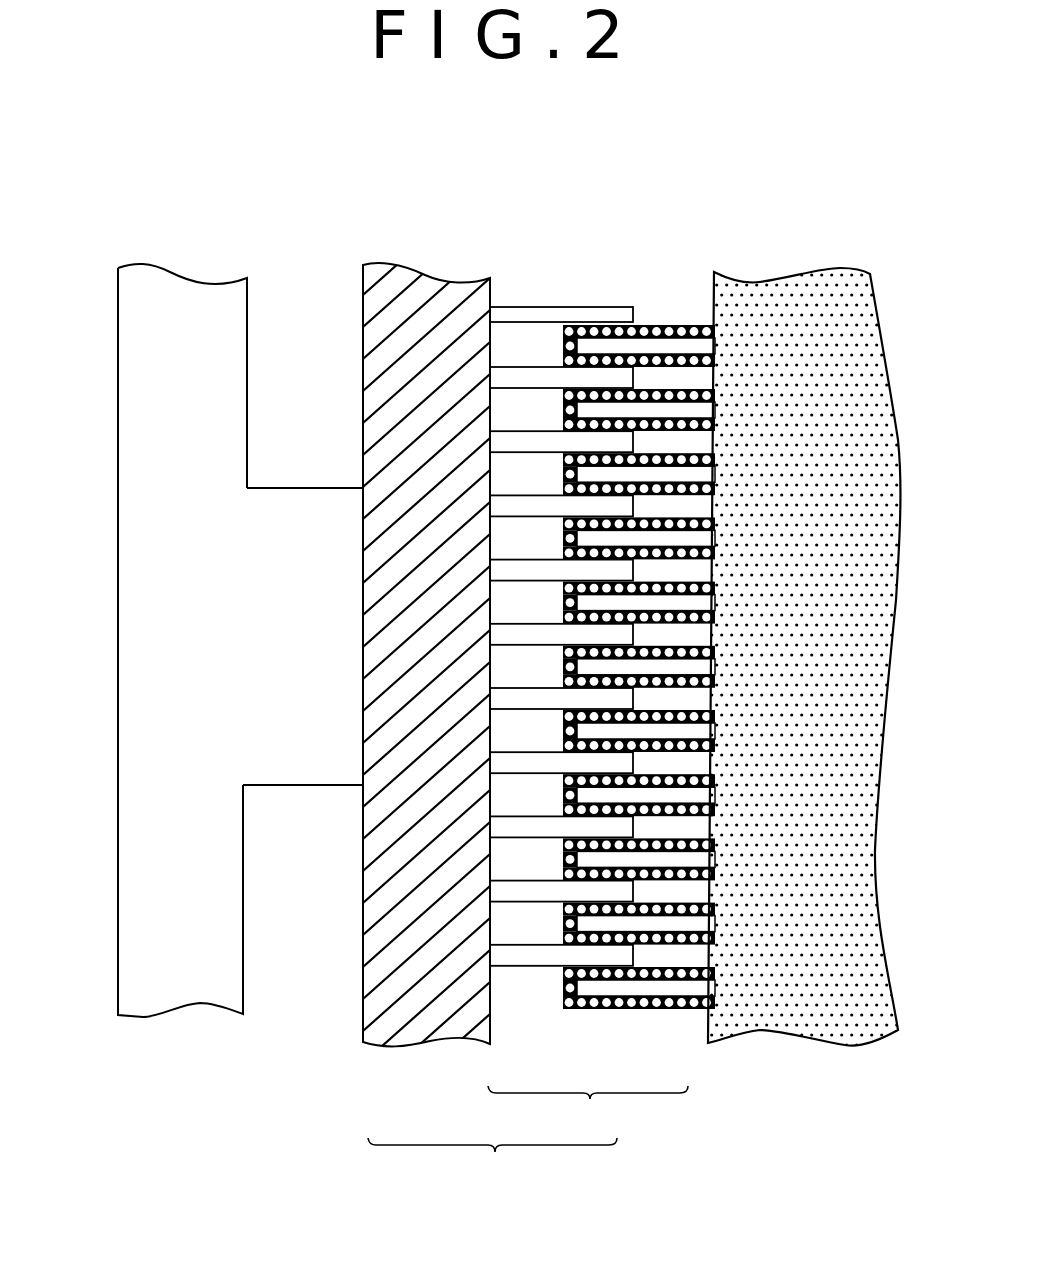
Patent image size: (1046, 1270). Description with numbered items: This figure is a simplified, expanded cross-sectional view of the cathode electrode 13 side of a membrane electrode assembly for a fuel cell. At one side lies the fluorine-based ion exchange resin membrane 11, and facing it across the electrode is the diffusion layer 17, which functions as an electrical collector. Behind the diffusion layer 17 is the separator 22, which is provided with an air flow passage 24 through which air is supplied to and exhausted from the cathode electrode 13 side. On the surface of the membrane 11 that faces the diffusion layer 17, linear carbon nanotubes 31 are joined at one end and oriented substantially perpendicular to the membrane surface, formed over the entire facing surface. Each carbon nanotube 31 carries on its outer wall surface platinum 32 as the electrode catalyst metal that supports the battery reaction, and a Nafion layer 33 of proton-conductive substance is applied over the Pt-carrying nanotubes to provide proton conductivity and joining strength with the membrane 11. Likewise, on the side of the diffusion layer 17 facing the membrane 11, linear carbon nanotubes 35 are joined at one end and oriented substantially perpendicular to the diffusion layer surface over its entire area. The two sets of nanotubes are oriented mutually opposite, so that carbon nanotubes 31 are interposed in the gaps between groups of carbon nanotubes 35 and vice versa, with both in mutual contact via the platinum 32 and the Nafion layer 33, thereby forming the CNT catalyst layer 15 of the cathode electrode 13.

The fluorine-based ion exchange resin membrane 11 is at (872, 406).
The cathode electrode 13 is at (492, 1166).
The CNT catalyst layer 15 is at (588, 1115).
The diffusion layer 17 is at (400, 1048).
The separator 22 is at (138, 620).
The air flow passage 24 is at (285, 285).
The carbon nanotubes 31 is at (609, 988).
The platinum 32 is at (655, 1011).
The Nafion layer 33 is at (547, 983).
The carbon nanotubes 35 is at (507, 956).